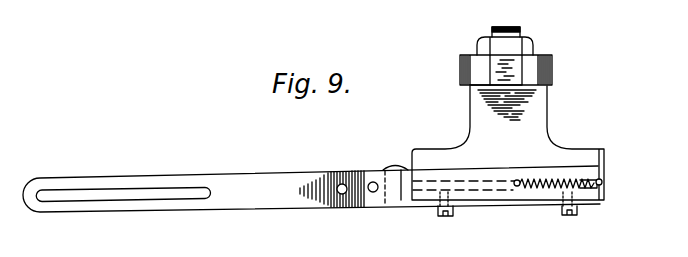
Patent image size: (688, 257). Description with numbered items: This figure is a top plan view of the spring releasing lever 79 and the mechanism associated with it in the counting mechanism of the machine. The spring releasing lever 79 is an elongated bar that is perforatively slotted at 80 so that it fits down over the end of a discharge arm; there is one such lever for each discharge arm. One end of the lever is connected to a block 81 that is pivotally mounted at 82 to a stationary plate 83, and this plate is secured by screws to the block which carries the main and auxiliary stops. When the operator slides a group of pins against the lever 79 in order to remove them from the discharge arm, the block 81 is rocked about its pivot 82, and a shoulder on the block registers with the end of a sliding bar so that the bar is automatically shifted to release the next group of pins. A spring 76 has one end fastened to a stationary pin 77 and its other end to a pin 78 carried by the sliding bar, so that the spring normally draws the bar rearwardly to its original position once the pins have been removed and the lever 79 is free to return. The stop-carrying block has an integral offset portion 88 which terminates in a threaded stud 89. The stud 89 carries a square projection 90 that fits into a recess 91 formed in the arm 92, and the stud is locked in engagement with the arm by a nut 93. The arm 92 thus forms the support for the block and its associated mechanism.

The spring 76 is at (584, 191).
The stationary pin 77 is at (518, 189).
The pin 78 is at (602, 182).
The spring releasing lever 79 is at (210, 208).
The slot 80 is at (140, 200).
The block 81 is at (401, 165).
The pivot 82 is at (387, 196).
The stationary plate 83 is at (498, 207).
The offset portion 88 is at (540, 118).
The threaded stud 89 is at (520, 32).
The square projection 90 is at (515, 67).
The recess 91 is at (492, 67).
The arm 92 is at (553, 70).
The nut 93 is at (500, 50).